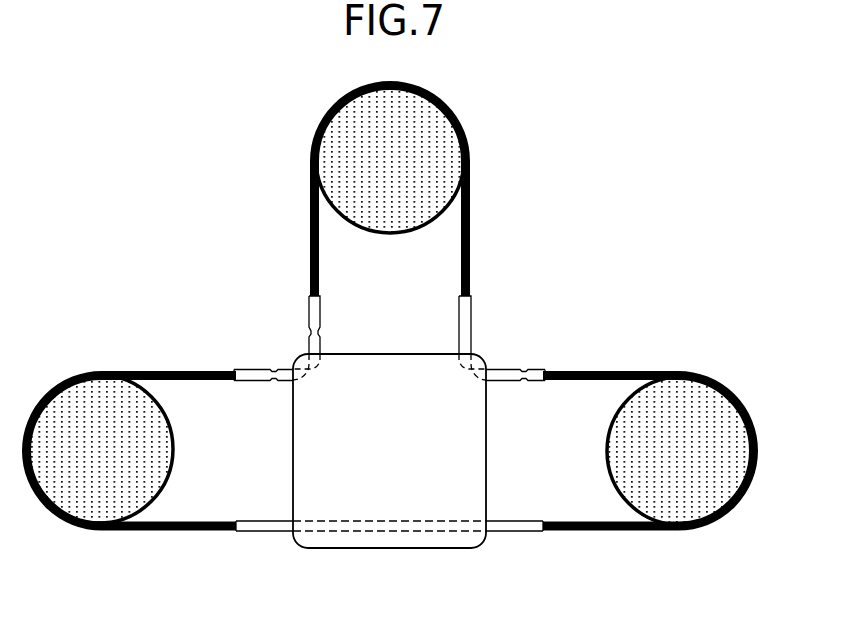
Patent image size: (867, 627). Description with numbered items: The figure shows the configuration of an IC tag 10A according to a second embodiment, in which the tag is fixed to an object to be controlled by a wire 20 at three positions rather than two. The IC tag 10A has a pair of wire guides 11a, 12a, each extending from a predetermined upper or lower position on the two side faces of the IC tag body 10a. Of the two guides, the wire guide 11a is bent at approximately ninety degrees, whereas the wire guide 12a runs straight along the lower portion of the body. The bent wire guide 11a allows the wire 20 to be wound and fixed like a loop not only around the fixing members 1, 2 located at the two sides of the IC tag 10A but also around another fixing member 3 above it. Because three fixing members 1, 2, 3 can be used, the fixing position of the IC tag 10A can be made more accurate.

The wire 20 is at (315, 125).
The fixing member 3 is at (347, 162).
The fixing member 2 is at (95, 503).
The fixing member 1 is at (688, 500).
The IC tag 10A is at (297, 349).
The wire guide 11a is at (533, 367).
The wire guide 12a is at (263, 533).
The IC tag body 10a is at (430, 533).